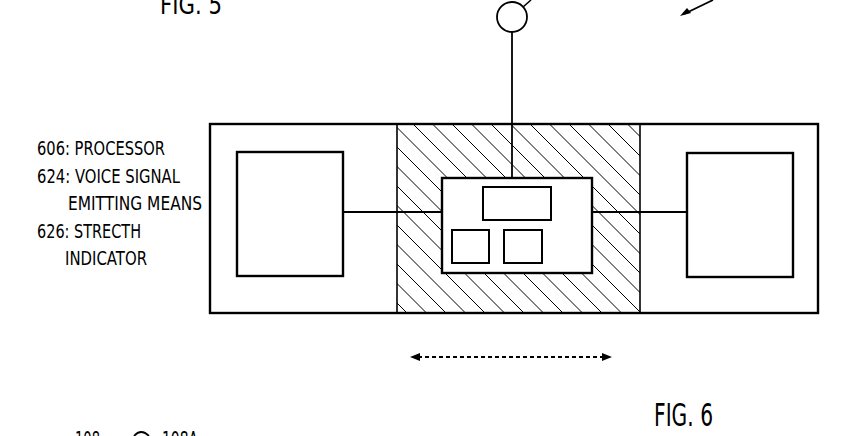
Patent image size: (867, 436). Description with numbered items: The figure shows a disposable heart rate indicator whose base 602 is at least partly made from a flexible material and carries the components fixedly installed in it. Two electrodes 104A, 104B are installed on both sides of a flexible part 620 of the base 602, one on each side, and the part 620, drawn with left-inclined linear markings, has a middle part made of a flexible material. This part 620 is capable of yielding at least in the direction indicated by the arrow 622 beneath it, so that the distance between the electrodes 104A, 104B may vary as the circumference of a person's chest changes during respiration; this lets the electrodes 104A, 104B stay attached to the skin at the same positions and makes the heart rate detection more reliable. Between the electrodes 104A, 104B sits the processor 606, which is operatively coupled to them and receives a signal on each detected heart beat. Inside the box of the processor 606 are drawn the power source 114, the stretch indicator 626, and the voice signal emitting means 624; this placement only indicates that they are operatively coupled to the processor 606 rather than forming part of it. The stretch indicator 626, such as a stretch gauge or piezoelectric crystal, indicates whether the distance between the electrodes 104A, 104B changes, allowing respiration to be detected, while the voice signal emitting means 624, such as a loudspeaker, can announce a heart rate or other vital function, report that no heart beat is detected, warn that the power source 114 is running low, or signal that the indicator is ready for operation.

The base 602 is at (711, 124).
The part of the base 620 is at (413, 124).
The arrow 622 is at (525, 357).
The processor 606 is at (517, 225).
The voice signal emitting means 624 is at (537, 260).
The stretch indicator 626 is at (517, 203).
The power source 114 is at (470, 246).
The electrode 104A is at (290, 214).
The electrode 104B is at (740, 215).